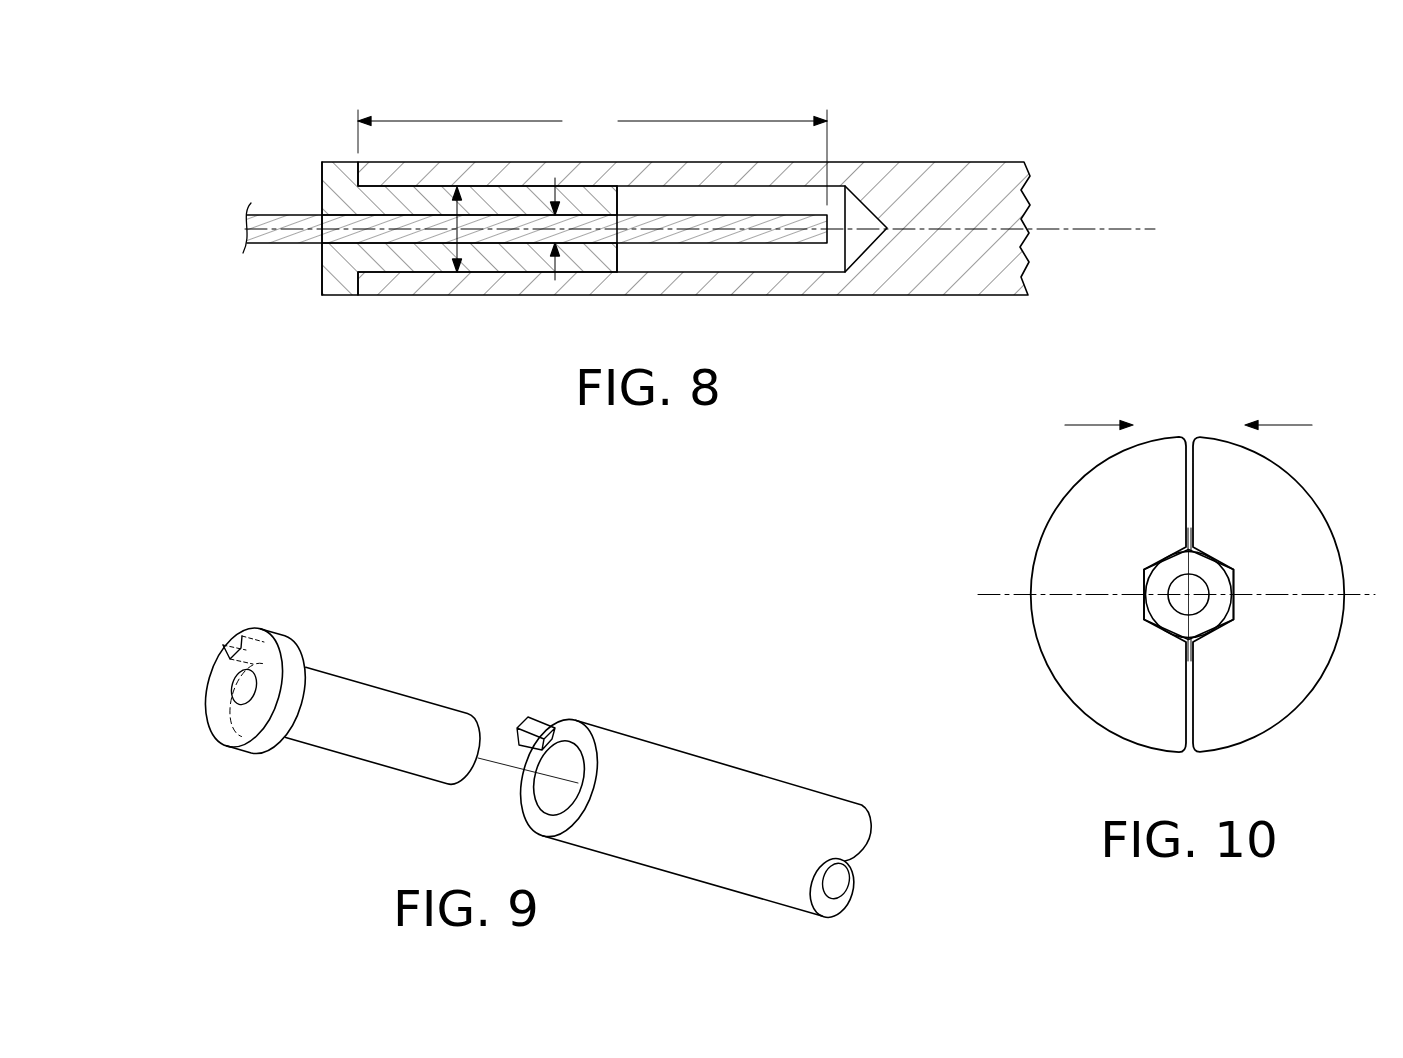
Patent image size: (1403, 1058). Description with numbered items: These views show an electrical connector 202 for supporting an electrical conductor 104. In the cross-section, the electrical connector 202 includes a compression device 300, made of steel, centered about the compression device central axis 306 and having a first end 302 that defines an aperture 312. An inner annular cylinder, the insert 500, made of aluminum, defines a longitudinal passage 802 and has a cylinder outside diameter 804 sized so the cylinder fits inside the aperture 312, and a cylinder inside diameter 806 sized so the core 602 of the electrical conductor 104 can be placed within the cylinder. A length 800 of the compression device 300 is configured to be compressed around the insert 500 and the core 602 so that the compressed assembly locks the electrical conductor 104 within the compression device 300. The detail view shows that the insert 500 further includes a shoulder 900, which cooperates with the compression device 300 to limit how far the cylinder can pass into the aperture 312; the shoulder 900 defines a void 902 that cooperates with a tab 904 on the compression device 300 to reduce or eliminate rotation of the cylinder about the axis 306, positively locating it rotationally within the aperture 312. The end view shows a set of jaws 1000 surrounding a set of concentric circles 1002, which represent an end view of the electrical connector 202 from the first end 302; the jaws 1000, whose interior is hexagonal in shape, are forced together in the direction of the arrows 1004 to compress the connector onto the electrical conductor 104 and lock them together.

In FIG. 8, the electrical conductor 104 is at (258, 186).
In FIG. 8, the electrical connector 202 is at (753, 70).
In FIG. 8, the compression device 300 is at (980, 161).
In FIG. 9, the compression device 300 is at (668, 792).
In FIG. 8, the first end 302 is at (303, 286).
In FIG. 8, the compression device central axis 306 is at (1127, 228).
In FIG. 9, the compression device central axis 306 is at (488, 753).
In FIG. 8, the aperture 312 is at (772, 199).
In FIG. 9, the aperture 312 is at (548, 797).
In FIG. 8, the insert 500 is at (617, 258).
In FIG. 9, the insert 500 is at (324, 673).
In FIG. 8, the core 602 is at (752, 243).
In FIG. 8, the length 800 is at (592, 157).
In FIG. 8, the longitudinal passage 802 is at (312, 249).
In FIG. 8, the cylinder outside diameter 804 is at (450, 233).
In FIG. 8, the cylinder inside diameter 806 is at (555, 227).
In FIG. 9, the shoulder 900 is at (268, 750).
In FIG. 9, the void 902 is at (231, 636).
In FIG. 9, the tab 904 is at (540, 718).
In FIG. 10, the jaws 1000 is at (1098, 717).
In FIG. 10, the concentric circles 1002 is at (1225, 620).
In FIG. 10, the arrows 1004 is at (1090, 424).